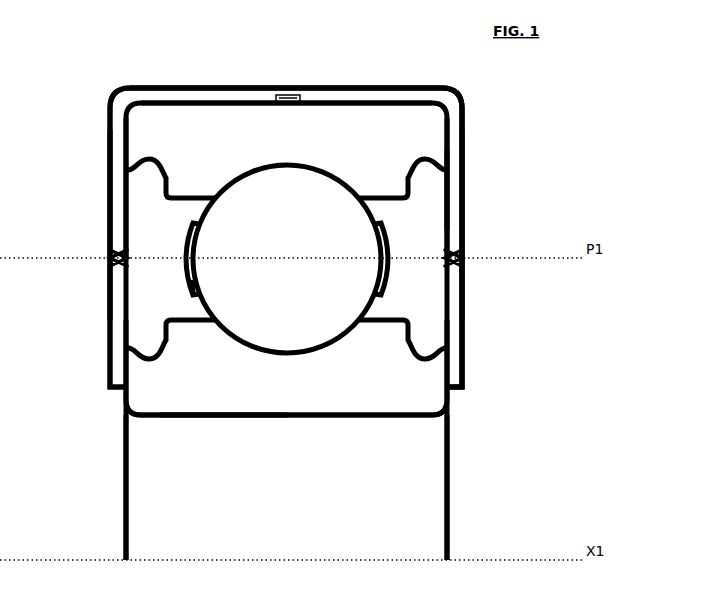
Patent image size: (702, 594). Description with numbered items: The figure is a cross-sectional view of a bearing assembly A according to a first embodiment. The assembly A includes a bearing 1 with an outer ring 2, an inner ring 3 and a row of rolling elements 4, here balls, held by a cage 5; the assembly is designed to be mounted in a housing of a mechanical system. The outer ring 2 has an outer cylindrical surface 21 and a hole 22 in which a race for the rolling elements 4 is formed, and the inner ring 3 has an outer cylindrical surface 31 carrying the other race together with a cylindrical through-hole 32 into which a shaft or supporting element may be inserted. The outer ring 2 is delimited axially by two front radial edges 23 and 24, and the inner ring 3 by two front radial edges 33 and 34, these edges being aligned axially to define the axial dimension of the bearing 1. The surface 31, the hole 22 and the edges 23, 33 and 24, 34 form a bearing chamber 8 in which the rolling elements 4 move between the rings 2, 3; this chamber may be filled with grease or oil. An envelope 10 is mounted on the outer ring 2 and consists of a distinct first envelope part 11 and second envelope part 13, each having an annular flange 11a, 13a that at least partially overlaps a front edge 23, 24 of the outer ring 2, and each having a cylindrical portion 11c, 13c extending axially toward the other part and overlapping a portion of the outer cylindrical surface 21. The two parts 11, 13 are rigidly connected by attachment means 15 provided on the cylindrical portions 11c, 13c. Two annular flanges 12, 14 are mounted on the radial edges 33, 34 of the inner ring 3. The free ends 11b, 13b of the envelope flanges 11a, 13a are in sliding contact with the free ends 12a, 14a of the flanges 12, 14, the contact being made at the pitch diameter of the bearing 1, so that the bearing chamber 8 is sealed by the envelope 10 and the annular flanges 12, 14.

The bearing 1 is at (175, 431).
The outer ring 2 is at (362, 112).
The inner ring 3 is at (306, 404).
The rolling elements 4 is at (287, 259).
The cage 5 is at (188, 291).
The bearing chamber 8 is at (449, 188).
The envelope 10 is at (62, 97).
The first envelope part 11 is at (478, 116).
The annular flange 11a is at (466, 212).
The free end 11b is at (463, 264).
The cylindrical portion 11c is at (402, 102).
The annular flange 12 is at (463, 300).
The free end 12a is at (446, 258).
The second envelope part 13 is at (108, 87).
The annular flange 13a is at (108, 214).
The free end 13b is at (128, 258).
The cylindrical portion 13c is at (186, 101).
The annular flange 14 is at (108, 328).
The free end 14a is at (108, 265).
The attachment means 15 is at (284, 90).
The outer cylindrical surface 21 is at (336, 101).
The hole 22 is at (386, 206).
The front radial edge 23 is at (449, 150).
The front radial edge 24 is at (124, 150).
The outer cylindrical surface 31 is at (396, 319).
The cylindrical through-hole 32 is at (230, 418).
The front radial edge 33 is at (451, 378).
The front radial edge 34 is at (123, 372).
The assembly A is at (576, 100).